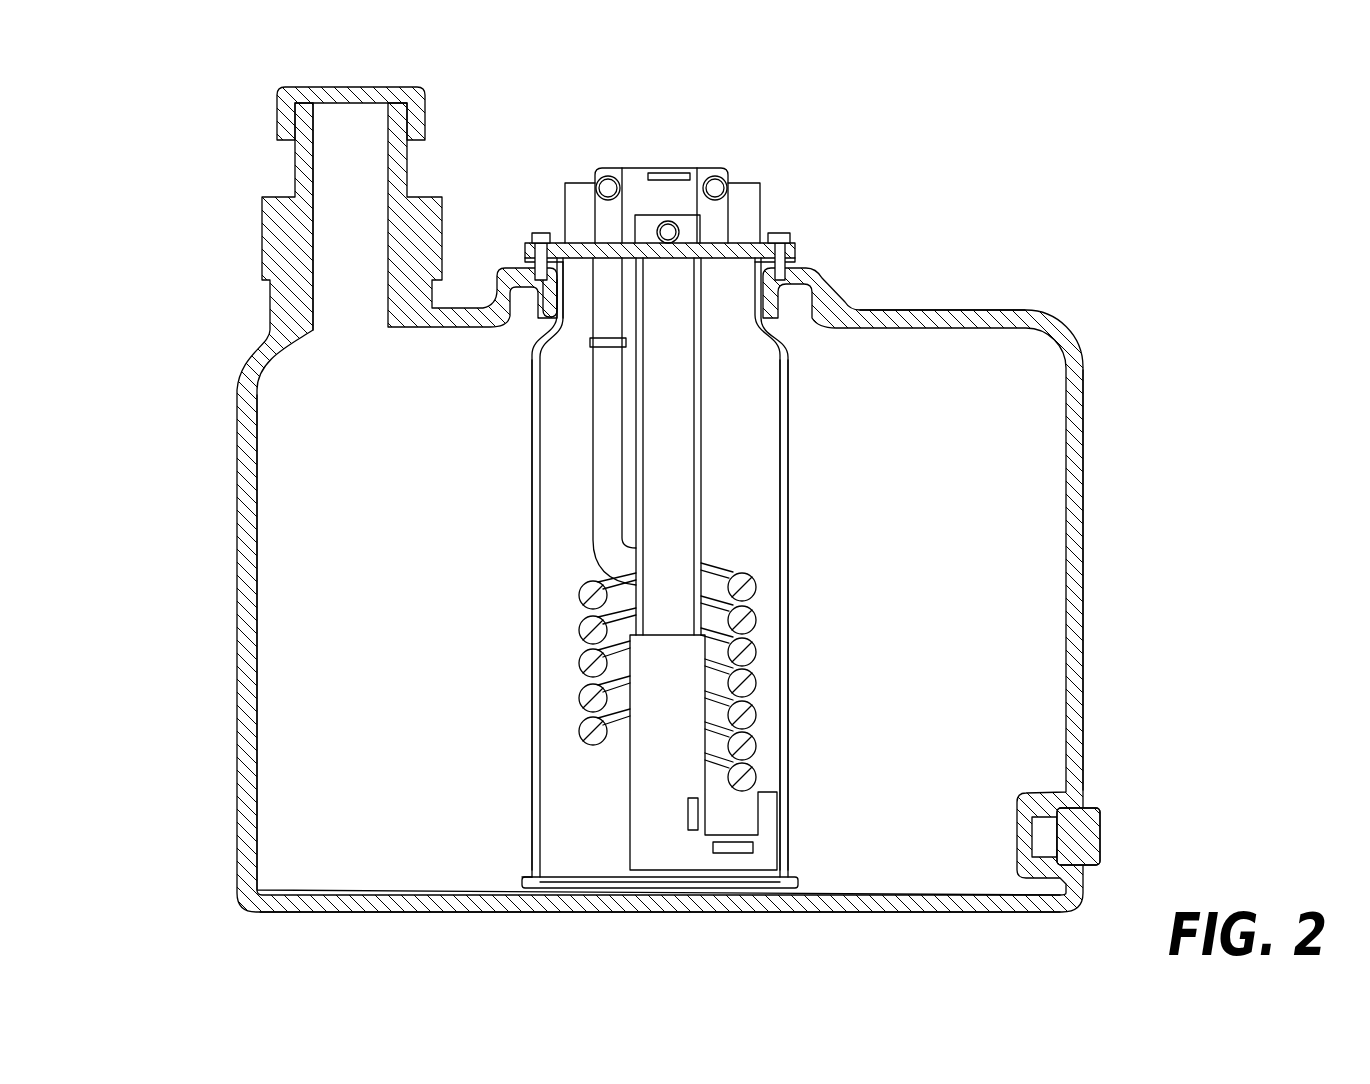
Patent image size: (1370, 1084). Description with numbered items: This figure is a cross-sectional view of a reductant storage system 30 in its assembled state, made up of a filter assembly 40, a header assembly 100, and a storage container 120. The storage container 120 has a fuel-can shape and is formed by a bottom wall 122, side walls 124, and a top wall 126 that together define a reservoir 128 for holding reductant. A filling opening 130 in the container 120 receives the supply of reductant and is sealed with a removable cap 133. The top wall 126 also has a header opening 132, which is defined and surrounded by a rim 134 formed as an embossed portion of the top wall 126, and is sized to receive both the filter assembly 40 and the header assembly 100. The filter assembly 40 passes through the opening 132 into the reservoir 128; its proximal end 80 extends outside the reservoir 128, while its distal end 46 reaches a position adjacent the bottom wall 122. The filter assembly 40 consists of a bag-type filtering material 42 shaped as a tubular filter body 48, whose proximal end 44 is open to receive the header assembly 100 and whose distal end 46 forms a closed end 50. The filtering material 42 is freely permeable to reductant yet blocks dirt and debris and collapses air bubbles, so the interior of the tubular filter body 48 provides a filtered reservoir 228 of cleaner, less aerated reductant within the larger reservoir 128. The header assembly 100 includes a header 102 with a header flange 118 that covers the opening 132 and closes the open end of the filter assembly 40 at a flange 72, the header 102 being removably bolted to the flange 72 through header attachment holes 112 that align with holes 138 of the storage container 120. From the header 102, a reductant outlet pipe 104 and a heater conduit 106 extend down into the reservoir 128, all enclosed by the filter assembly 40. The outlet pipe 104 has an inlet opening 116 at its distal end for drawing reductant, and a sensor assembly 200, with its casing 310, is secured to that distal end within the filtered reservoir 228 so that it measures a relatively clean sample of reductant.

The reductant storage system 30 is at (670, 501).
The filter assembly 40 is at (670, 528).
The filtering material 42 is at (788, 747).
The proximal end of filtering material 44 is at (787, 350).
The distal end of filter assembly 46 is at (787, 888).
The tubular filter body 48 is at (532, 520).
The closed end 50 is at (527, 877).
The flange 72 is at (528, 262).
The proximal end of filter assembly 80 is at (793, 253).
The header assembly 100 is at (670, 169).
The header 102 is at (745, 190).
The reductant outlet pipe 104 is at (693, 543).
The heater conduit 106 is at (600, 448).
The header attachment holes 112 is at (780, 243).
The inlet opening 116 is at (687, 877).
The header flange 118 is at (553, 243).
The storage container 120 is at (1072, 530).
The bottom wall 122 is at (357, 905).
The side walls 124 is at (237, 587).
The top wall 126 is at (972, 310).
The reservoir 128 is at (318, 685).
The filling opening 130 is at (343, 202).
The header opening 132 is at (583, 297).
The removable cap 133 is at (293, 88).
The rim 134 is at (541, 307).
The holes of storage container 138 is at (528, 267).
The sensor assembly 200 is at (675, 825).
The filtered reservoir 228 is at (763, 488).
The casing 310 is at (637, 792).